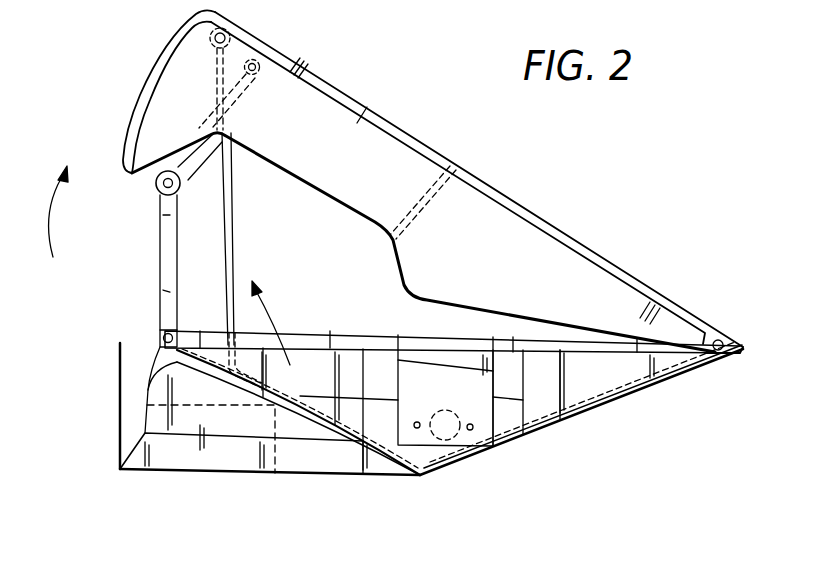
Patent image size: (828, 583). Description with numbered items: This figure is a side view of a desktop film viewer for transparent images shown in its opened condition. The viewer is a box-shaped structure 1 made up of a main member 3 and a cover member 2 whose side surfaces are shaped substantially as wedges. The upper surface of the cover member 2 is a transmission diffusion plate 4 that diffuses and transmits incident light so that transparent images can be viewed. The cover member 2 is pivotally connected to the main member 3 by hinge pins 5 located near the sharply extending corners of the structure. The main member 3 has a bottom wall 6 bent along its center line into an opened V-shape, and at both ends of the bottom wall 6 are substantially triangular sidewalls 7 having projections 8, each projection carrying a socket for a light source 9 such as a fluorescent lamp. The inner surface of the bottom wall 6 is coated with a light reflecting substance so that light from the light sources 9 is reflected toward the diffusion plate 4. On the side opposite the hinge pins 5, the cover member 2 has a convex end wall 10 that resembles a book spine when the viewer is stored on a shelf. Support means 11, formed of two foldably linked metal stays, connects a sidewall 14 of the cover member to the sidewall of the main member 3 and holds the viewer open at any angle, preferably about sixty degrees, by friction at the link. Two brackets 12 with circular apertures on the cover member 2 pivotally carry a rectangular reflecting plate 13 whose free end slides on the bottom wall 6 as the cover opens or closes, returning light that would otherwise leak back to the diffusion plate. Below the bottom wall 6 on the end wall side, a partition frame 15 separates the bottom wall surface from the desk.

The box-shaped structure 1 is at (420, 483).
The cover member 2 is at (518, 237).
The main member 3 is at (653, 383).
The transmission diffusion plate 4 is at (448, 158).
The hinge pins 5 is at (720, 340).
The bottom wall 6 is at (337, 428).
The sidewalls 7 is at (573, 400).
The projections 8 is at (448, 463).
The light sources 9 is at (460, 433).
The end wall 10 is at (130, 110).
The support means 11 is at (163, 292).
The brackets 12 is at (205, 38).
The reflecting plate 13 is at (220, 238).
The sidewall of the cover member 14 is at (365, 117).
The partition frame 15 is at (198, 427).